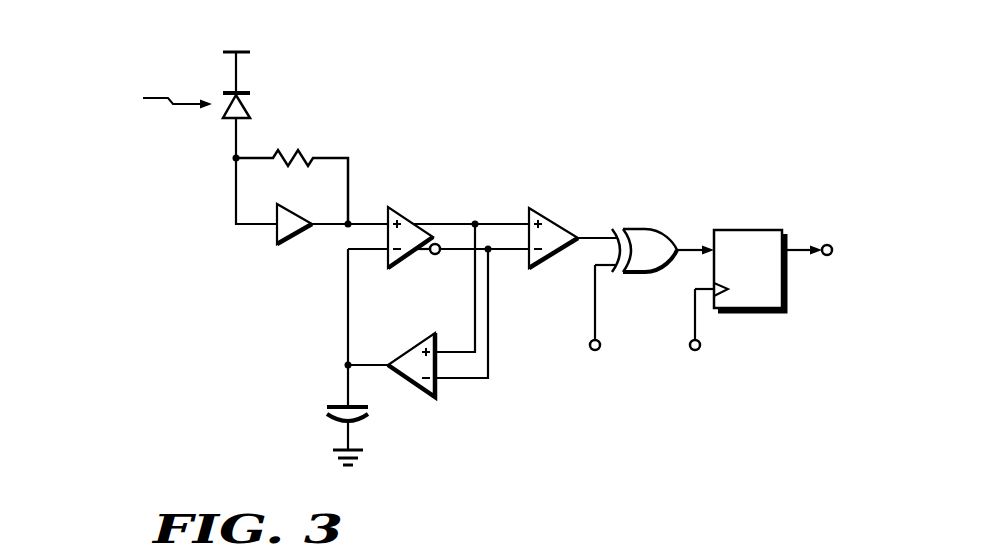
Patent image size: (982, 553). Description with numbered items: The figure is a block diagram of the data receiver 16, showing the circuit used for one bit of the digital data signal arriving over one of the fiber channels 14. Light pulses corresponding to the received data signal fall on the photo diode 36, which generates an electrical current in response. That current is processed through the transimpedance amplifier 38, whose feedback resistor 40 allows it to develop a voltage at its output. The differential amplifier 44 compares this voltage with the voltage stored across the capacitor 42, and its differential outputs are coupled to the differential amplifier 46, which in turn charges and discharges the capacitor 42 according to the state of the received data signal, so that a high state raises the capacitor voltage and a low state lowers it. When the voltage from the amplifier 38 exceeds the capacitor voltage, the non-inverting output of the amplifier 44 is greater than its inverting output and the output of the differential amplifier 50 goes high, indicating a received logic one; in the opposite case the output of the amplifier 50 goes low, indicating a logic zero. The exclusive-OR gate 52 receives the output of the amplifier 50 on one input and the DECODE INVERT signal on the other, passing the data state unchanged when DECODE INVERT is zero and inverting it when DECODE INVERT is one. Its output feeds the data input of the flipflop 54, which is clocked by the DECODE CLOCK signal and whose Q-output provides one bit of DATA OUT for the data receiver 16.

The fiber channels 14 is at (127, 112).
The data receiver 16 is at (693, 63).
The photo diode 36 is at (254, 103).
The transimpedance amplifier 38 is at (294, 237).
The feedback resistor 40 is at (296, 150).
The capacitor 42 is at (323, 415).
The differential amplifier 44 is at (414, 217).
The differential amplifier 46 is at (428, 392).
The differential amplifier 50 is at (546, 214).
The exclusive-OR gate 52 is at (647, 229).
The flipflop 54 is at (753, 230).